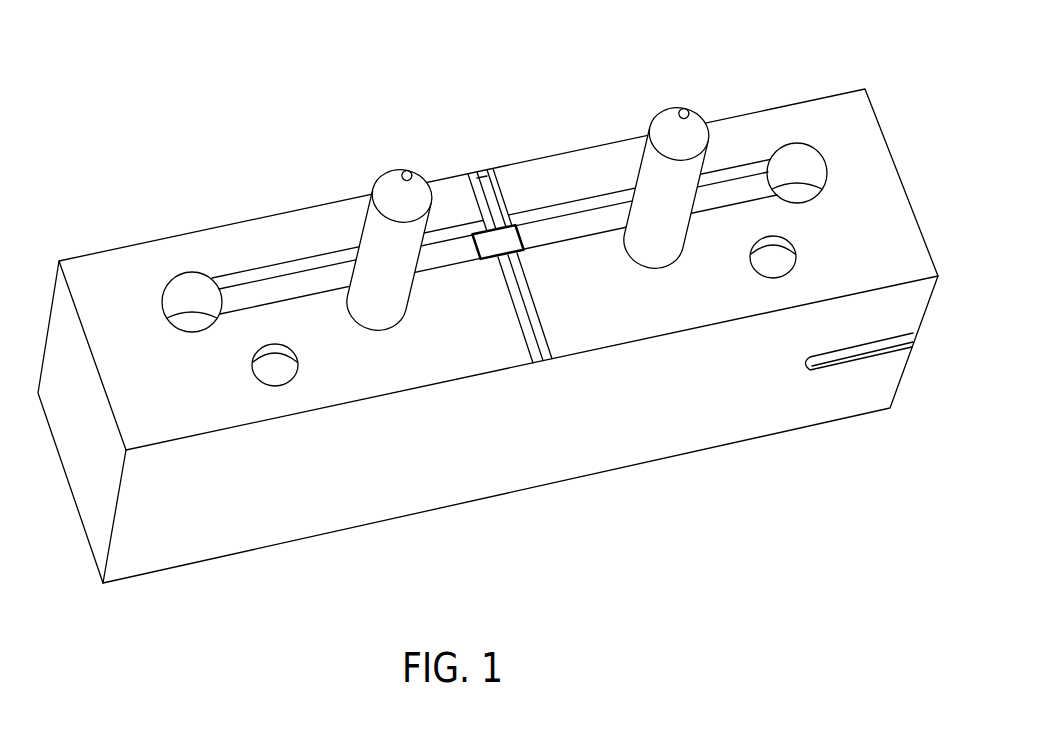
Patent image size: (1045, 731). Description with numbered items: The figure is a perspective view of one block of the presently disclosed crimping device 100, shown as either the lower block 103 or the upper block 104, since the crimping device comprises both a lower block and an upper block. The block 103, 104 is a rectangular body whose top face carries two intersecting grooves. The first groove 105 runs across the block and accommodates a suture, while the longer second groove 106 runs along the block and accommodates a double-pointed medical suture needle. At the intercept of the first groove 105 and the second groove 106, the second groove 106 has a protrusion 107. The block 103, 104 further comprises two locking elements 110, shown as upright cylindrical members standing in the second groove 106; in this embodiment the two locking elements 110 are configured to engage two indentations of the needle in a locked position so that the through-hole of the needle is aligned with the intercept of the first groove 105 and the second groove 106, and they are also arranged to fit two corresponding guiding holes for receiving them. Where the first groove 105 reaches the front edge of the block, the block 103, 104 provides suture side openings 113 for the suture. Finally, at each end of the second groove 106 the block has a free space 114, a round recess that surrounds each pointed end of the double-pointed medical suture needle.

The crimping device 100 is at (485, 300).
The lower block 103 is at (488, 336).
The upper block 104 is at (847, 262).
The first groove 105 is at (515, 264).
The second groove 106 is at (285, 273).
The protrusion 107 is at (497, 242).
The locking elements 110 is at (373, 237).
The suture side openings 113 is at (545, 363).
The free space 114 is at (190, 286).